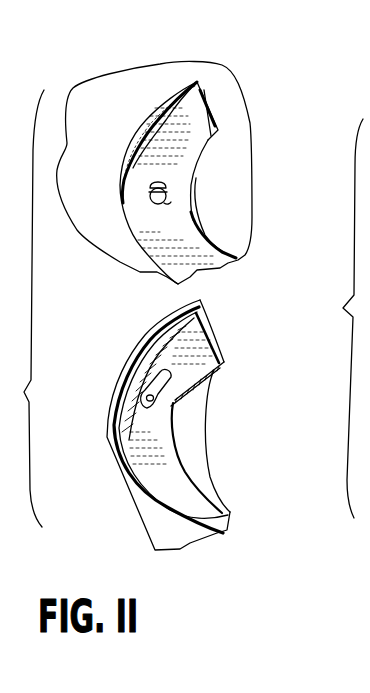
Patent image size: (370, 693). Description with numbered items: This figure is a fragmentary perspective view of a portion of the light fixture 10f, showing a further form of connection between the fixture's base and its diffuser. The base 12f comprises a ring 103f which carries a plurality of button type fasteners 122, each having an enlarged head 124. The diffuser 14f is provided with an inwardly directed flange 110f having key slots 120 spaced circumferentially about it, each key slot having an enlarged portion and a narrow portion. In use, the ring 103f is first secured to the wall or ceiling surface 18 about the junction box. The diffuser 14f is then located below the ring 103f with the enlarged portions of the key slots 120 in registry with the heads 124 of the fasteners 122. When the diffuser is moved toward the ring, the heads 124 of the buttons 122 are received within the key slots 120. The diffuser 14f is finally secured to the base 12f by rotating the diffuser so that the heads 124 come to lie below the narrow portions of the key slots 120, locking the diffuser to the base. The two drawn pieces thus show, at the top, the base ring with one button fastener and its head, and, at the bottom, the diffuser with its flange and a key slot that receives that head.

The wall or ceiling surface 18 is at (120, 88).
The base 12f is at (122, 160).
The ring 103f is at (175, 170).
The button type fasteners 122 is at (151, 203).
The enlarged head 124 is at (167, 200).
The light fixture 10f is at (110, 332).
The diffuser 14f is at (130, 492).
The inwardly directed flange 110f is at (214, 372).
The key slots 120 is at (171, 381).